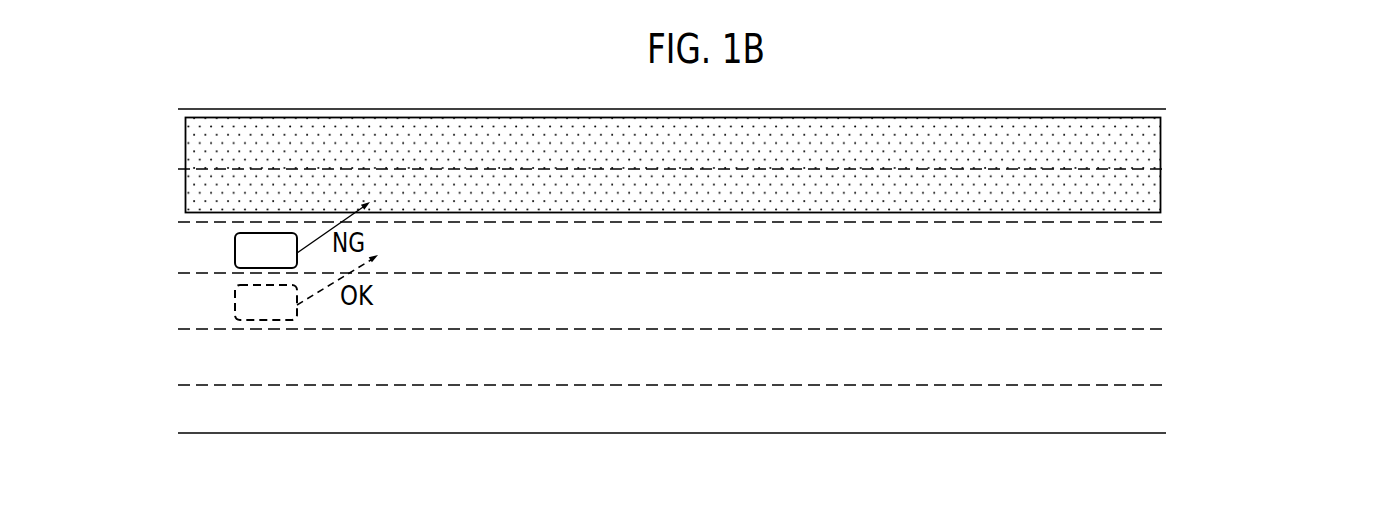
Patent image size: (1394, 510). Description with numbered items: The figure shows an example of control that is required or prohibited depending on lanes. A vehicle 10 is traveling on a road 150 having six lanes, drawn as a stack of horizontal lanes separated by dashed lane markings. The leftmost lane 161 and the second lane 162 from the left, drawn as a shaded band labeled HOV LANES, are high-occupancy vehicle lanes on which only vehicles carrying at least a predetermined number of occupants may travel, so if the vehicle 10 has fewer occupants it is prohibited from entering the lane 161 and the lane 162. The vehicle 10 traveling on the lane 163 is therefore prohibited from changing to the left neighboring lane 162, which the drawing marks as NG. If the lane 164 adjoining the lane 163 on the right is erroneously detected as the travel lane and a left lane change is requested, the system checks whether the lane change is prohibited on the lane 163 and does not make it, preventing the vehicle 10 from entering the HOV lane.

The vehicle 10 is at (235, 248).
The road 150 is at (775, 270).
The leftmost lane 161 is at (1138, 149).
The second lane 162 is at (1138, 196).
The lane 163 is at (1138, 249).
The lane 164 is at (1138, 304).